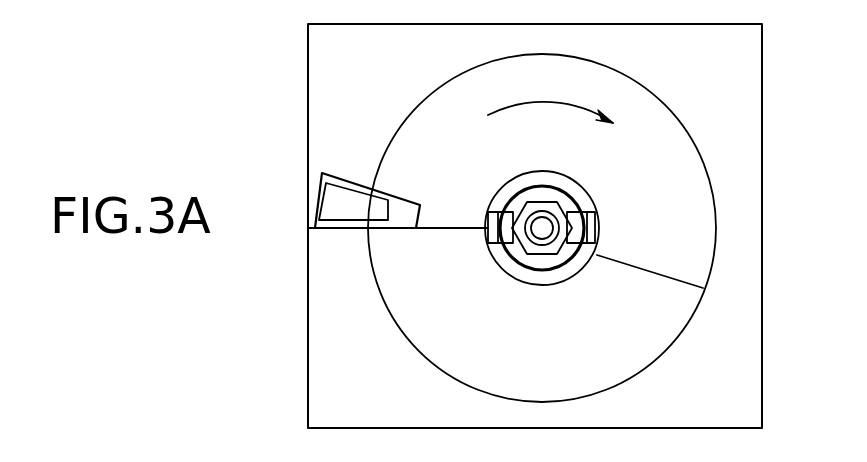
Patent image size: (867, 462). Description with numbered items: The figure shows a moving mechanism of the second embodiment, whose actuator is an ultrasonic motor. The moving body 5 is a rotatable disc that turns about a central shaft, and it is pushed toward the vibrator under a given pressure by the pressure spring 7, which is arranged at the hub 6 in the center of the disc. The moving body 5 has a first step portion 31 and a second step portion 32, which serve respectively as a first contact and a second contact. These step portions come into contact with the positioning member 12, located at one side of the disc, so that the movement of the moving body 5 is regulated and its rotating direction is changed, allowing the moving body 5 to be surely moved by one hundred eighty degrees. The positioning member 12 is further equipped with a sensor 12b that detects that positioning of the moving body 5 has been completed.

The moving body 5 is at (622, 355).
The hub 6 is at (505, 263).
The pressure spring 7 is at (570, 241).
The positioning member 12 is at (338, 213).
The sensor 12b is at (397, 212).
The first step portion 31 is at (430, 230).
The second step portion 32 is at (663, 273).